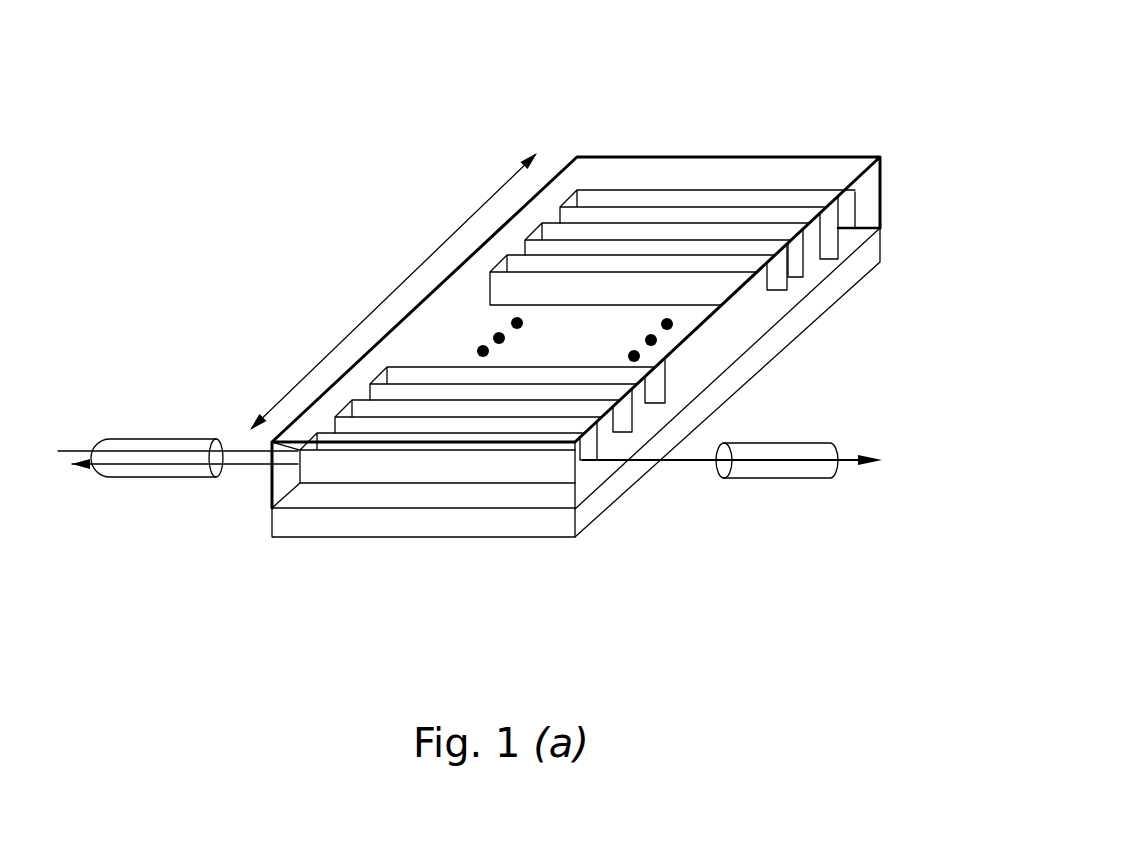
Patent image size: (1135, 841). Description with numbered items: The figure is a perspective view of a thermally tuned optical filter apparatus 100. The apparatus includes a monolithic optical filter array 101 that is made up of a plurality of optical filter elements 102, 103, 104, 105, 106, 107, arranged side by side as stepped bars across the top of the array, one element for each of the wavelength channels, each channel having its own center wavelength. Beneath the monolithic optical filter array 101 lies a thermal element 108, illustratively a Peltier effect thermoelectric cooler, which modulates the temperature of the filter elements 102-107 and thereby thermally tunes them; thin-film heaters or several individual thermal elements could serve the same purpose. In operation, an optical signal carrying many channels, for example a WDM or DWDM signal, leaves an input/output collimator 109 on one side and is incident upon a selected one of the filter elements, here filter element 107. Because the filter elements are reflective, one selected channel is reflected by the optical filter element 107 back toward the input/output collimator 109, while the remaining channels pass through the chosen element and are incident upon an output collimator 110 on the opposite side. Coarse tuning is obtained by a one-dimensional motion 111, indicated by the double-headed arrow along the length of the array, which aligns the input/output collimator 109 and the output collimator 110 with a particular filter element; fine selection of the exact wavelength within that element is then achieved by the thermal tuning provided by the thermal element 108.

The thermally tuned optical filter apparatus 100 is at (265, 56).
The monolithic optical filter array 101 is at (880, 157).
The optical filter element 102 is at (845, 206).
The optical filter element 103 is at (856, 266).
The optical filter element 104 is at (820, 310).
The optical filter element 105 is at (680, 392).
The optical filter element 106 is at (668, 438).
The optical filter element 107 is at (583, 477).
The thermal element 108 is at (400, 525).
The input/output collimator 109 is at (143, 438).
The output collimator 110 is at (773, 477).
The one-dimensional motion 111 is at (410, 277).